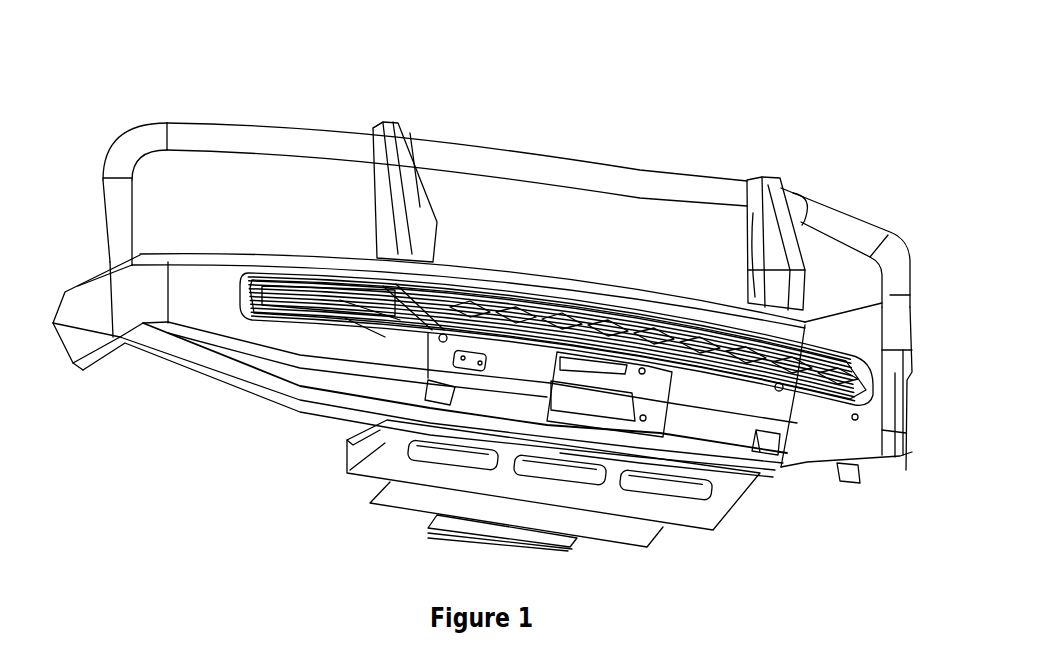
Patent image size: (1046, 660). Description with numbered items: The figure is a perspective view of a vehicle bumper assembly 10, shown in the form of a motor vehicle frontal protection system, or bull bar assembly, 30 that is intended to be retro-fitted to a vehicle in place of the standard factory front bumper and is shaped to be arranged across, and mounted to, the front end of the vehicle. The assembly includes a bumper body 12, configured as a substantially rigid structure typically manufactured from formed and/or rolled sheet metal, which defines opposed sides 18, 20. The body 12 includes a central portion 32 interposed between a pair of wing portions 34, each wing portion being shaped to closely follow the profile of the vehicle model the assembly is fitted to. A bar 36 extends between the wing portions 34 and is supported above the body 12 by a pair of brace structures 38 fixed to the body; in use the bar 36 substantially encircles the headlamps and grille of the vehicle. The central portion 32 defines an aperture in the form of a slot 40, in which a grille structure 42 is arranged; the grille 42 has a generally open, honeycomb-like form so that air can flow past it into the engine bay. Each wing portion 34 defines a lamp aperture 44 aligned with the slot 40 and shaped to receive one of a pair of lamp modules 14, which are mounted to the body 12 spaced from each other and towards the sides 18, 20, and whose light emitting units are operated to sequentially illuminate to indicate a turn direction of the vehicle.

The vehicle bumper assembly 10 is at (690, 84).
The bumper body 12 is at (560, 286).
The lamp module 14 is at (303, 325).
The side 18 is at (85, 297).
The side 20 is at (913, 403).
The frontal protection system 30 is at (267, 90).
The central portion 32 is at (667, 298).
The wing portion 34 is at (178, 357).
The bar 36 is at (540, 156).
The brace structure 38 is at (397, 124).
The slot 40 is at (455, 290).
The grille structure 42 is at (712, 332).
The lamp aperture 44 is at (267, 280).